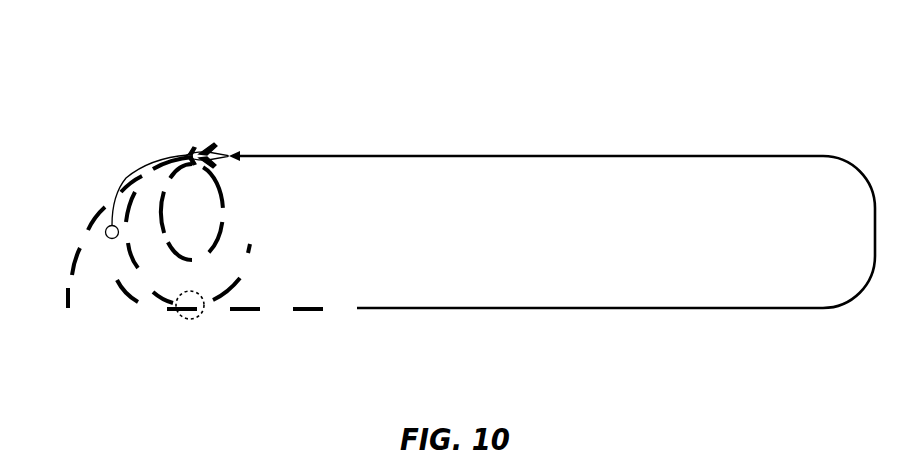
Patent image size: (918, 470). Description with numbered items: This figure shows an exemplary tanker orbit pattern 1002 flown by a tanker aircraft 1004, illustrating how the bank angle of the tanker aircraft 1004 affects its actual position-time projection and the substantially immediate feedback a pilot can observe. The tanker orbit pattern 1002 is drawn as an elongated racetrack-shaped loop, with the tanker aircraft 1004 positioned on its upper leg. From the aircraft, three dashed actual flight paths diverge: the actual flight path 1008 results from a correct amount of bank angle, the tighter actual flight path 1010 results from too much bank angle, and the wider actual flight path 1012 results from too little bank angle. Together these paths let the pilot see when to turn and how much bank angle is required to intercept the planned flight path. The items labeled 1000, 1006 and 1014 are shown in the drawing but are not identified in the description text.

The aircraft flight pattern system 1000 is at (699, 39).
The tanker orbit pattern 1002 is at (776, 156).
The tanker aircraft 1004 is at (208, 142).
The sensor line and target point 1006 is at (111, 239).
The actual flight path 1008 is at (240, 277).
The actual flight path 1010 is at (223, 203).
The actual flight path 1012 is at (78, 250).
The waypoint 1014 is at (190, 319).